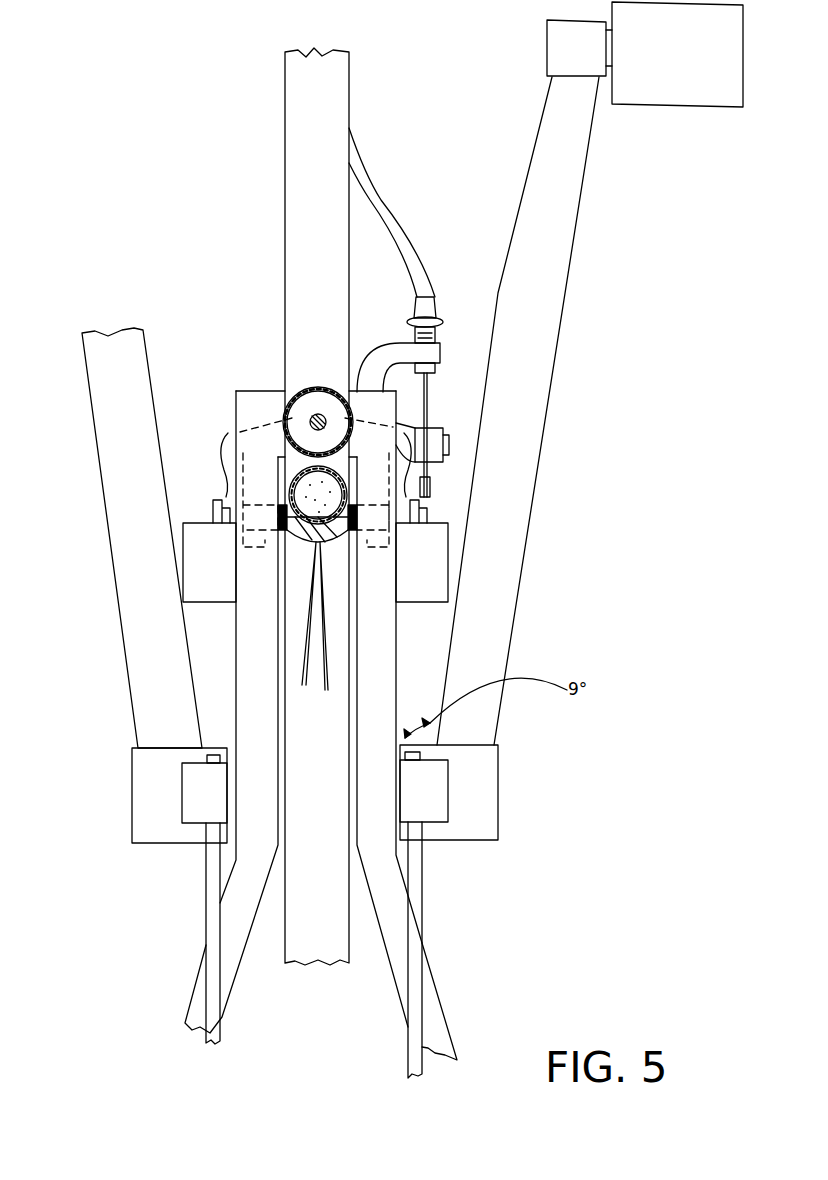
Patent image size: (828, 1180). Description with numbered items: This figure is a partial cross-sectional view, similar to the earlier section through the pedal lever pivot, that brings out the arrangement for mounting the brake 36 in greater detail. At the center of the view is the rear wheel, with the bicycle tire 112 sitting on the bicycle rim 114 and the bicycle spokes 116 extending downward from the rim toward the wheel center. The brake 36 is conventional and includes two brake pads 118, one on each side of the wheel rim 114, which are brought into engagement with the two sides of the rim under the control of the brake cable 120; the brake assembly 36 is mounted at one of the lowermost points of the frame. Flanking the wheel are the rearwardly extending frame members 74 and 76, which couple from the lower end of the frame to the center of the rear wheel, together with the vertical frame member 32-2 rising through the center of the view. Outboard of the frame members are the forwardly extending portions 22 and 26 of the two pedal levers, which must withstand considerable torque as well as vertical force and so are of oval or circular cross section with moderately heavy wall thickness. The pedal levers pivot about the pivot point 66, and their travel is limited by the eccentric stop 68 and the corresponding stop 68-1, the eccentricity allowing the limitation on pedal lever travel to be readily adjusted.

The vertical column 32-2 is at (332, 90).
The forwardly extending portion of pedal lever 26 is at (102, 347).
The forwardly extending portion of pedal lever 22 is at (537, 403).
The brake cable 120 is at (382, 198).
The brake 36 is at (436, 426).
The bicycle tire 112 is at (303, 488).
The bicycle rim 114 is at (323, 535).
The bicycle spokes 116 is at (305, 657).
The brake pads 118 is at (285, 532).
The left upper bracket 68-1 is at (191, 555).
The stop 68 is at (425, 563).
The rearwardly extending frame member 74 is at (263, 712).
The rearwardly extending frame member 76 is at (378, 712).
The pivot point 66 is at (455, 785).